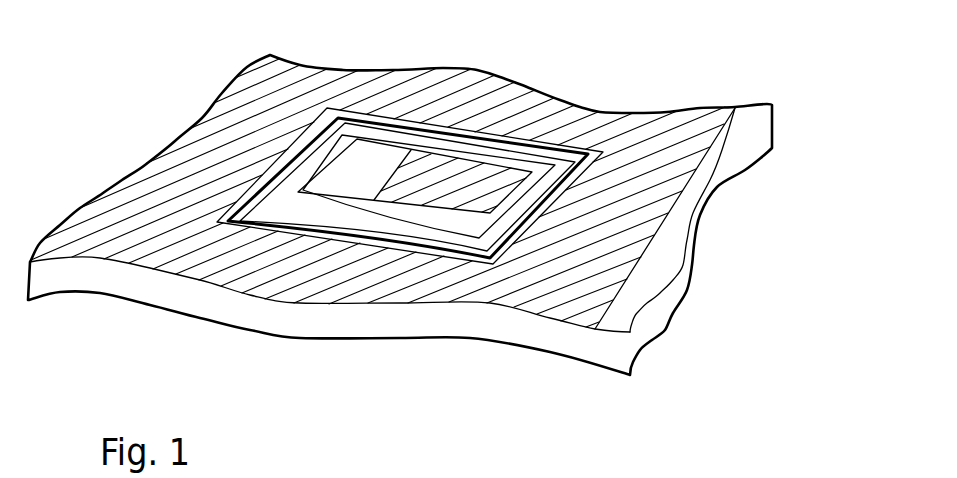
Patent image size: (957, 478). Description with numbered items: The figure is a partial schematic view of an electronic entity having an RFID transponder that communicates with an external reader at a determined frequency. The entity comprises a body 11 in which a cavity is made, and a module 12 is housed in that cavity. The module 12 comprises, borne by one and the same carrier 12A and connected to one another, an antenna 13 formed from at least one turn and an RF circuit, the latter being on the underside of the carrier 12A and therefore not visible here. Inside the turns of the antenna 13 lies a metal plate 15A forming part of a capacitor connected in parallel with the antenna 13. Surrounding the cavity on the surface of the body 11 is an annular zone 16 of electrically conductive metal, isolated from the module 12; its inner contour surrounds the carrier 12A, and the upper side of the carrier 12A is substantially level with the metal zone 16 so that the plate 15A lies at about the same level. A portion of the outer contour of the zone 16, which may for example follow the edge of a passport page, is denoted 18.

The body 11 is at (752, 138).
The module 12 is at (552, 181).
The carrier 12A is at (498, 262).
The antenna 13 is at (384, 141).
The metal plate 15A is at (462, 182).
The annular zone 16 is at (322, 268).
The portion of outer contour 18 is at (677, 203).